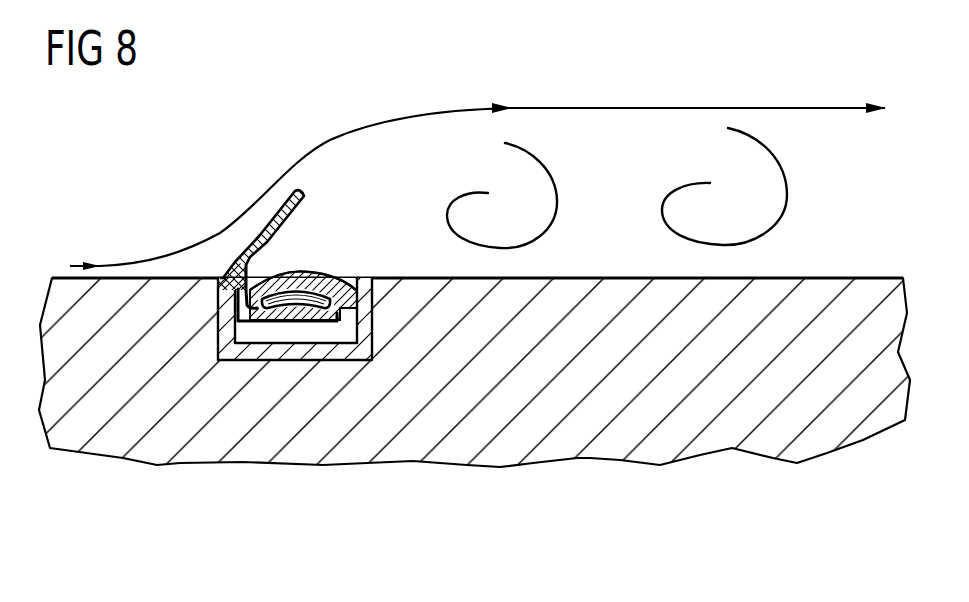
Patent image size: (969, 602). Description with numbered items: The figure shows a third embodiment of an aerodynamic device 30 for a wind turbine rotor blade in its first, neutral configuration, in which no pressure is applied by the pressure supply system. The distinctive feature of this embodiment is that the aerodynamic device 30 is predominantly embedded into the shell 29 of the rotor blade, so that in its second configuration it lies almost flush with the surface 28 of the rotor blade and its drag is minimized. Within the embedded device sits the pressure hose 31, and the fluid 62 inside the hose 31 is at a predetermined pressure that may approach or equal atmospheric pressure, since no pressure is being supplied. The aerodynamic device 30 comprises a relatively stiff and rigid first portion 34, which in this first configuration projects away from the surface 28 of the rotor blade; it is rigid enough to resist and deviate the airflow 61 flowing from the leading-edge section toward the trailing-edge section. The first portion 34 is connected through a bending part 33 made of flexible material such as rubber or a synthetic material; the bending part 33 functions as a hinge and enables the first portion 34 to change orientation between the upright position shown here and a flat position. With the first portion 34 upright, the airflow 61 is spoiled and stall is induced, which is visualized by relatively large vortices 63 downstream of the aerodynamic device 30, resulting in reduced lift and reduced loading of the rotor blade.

The surface 28 is at (820, 277).
The shell 29 is at (613, 428).
The aerodynamic device 30 is at (235, 200).
The pressure hose 31 is at (350, 287).
The bending part 33 is at (227, 265).
The first portion 34 is at (292, 202).
The airflow 61 is at (673, 106).
The fluid 62 is at (296, 286).
The vortices 63 is at (546, 164).